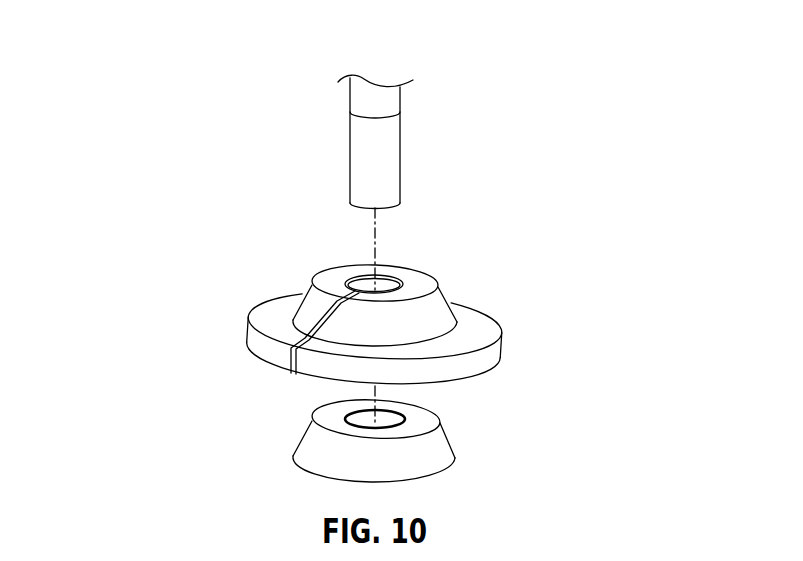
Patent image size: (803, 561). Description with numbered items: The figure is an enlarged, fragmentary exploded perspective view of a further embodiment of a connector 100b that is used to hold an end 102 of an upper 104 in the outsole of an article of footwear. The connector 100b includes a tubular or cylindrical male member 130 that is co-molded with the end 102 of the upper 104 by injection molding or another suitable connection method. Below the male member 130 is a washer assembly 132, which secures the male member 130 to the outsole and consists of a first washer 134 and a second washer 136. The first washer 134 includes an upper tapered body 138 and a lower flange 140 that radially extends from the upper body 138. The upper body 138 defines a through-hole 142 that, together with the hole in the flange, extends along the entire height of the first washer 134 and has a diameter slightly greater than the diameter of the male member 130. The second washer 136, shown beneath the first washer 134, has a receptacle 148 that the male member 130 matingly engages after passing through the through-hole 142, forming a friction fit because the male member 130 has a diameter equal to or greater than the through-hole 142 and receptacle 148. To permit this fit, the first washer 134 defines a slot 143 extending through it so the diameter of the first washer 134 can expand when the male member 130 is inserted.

The connector 100b is at (603, 205).
The end of the upper 102 is at (286, 148).
The upper 104 is at (355, 98).
The male member 130 is at (394, 144).
The washer assembly 132 is at (548, 483).
The first washer 134 is at (188, 335).
The second washer 136 is at (209, 428).
The upper tapered body 138 is at (312, 285).
The lower flange 140 is at (255, 344).
The through-hole 142 is at (393, 282).
The slot 143 is at (288, 370).
The receptacle 148 is at (387, 421).